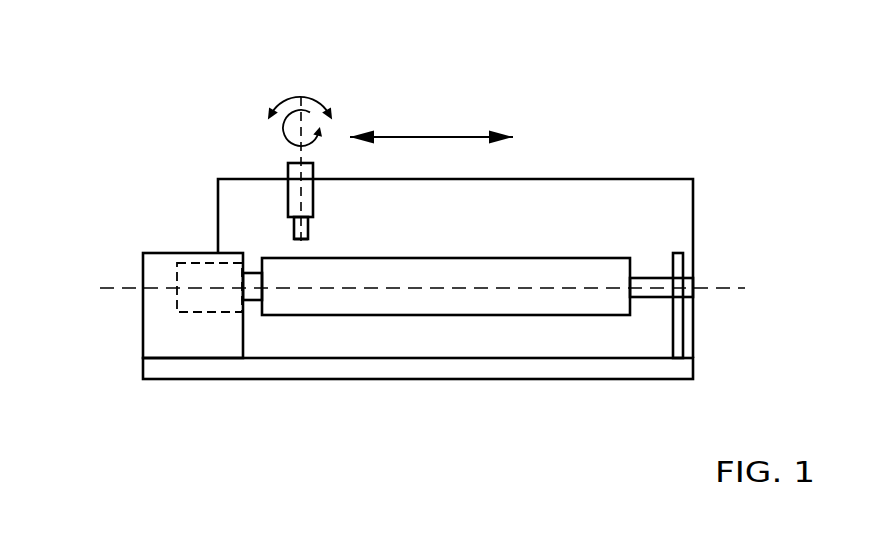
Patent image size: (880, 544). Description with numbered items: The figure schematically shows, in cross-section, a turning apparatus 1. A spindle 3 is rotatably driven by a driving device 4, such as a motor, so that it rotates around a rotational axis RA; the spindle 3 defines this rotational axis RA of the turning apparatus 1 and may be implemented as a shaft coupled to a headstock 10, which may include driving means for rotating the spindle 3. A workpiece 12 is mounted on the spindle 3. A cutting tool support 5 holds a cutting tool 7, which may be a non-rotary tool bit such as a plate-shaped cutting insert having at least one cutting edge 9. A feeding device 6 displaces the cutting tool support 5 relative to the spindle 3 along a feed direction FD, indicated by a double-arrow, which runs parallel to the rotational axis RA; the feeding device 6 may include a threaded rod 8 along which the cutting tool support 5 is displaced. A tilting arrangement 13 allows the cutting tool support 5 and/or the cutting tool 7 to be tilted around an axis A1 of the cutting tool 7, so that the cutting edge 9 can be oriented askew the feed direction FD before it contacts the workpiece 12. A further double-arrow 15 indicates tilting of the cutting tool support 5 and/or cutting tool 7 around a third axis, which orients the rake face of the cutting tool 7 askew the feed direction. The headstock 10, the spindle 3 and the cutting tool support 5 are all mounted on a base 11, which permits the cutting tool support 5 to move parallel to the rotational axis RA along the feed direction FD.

The turning apparatus 1 is at (150, 183).
The spindle 3 is at (258, 302).
The driving device 4 is at (200, 264).
The cutting tool support 5 is at (338, 199).
The feeding device 6 is at (580, 150).
The cutting tool 7 is at (326, 232).
The threaded rod 8 is at (668, 178).
The cutting edge 9 is at (294, 238).
The headstock 10 is at (208, 348).
The base 11 is at (598, 380).
The workpiece 12 is at (586, 258).
The tilting arrangement 13 is at (283, 137).
The double-arrow 15 is at (301, 97).
The axis A1 is at (304, 156).
The feed direction FD is at (424, 135).
The rotational axis RA is at (735, 287).